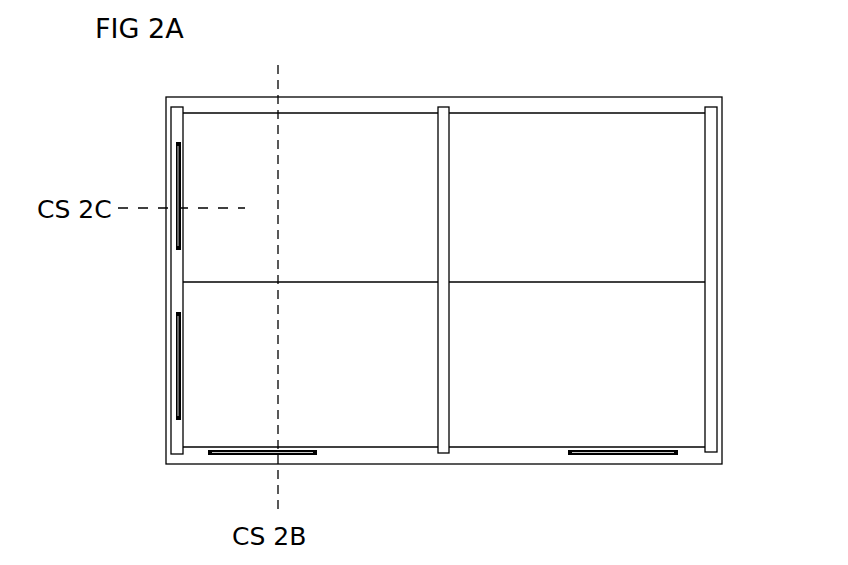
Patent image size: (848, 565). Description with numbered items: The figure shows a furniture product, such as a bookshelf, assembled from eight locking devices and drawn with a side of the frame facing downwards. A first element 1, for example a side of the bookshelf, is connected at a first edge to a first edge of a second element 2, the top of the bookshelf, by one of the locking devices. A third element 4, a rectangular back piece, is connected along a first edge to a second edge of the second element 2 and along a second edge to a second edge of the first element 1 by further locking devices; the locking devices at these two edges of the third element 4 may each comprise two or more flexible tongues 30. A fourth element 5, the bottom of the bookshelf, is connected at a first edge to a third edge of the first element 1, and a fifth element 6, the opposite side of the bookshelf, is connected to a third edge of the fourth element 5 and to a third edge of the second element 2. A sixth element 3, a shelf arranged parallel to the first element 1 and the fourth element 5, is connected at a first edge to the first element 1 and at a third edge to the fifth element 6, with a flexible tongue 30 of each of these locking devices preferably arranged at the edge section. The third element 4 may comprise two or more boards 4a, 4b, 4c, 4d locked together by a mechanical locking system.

The first element 1 is at (483, 453).
The second element 2 is at (177, 283).
The sixth element 3 is at (443, 418).
The third element 4 is at (410, 295).
The board 4a is at (318, 205).
The board 4b is at (318, 345).
The board 4c is at (585, 205).
The board 4d is at (585, 345).
The fourth element 5 is at (713, 392).
The fifth element 6 is at (585, 107).
The flexible tongue 30 is at (177, 192).